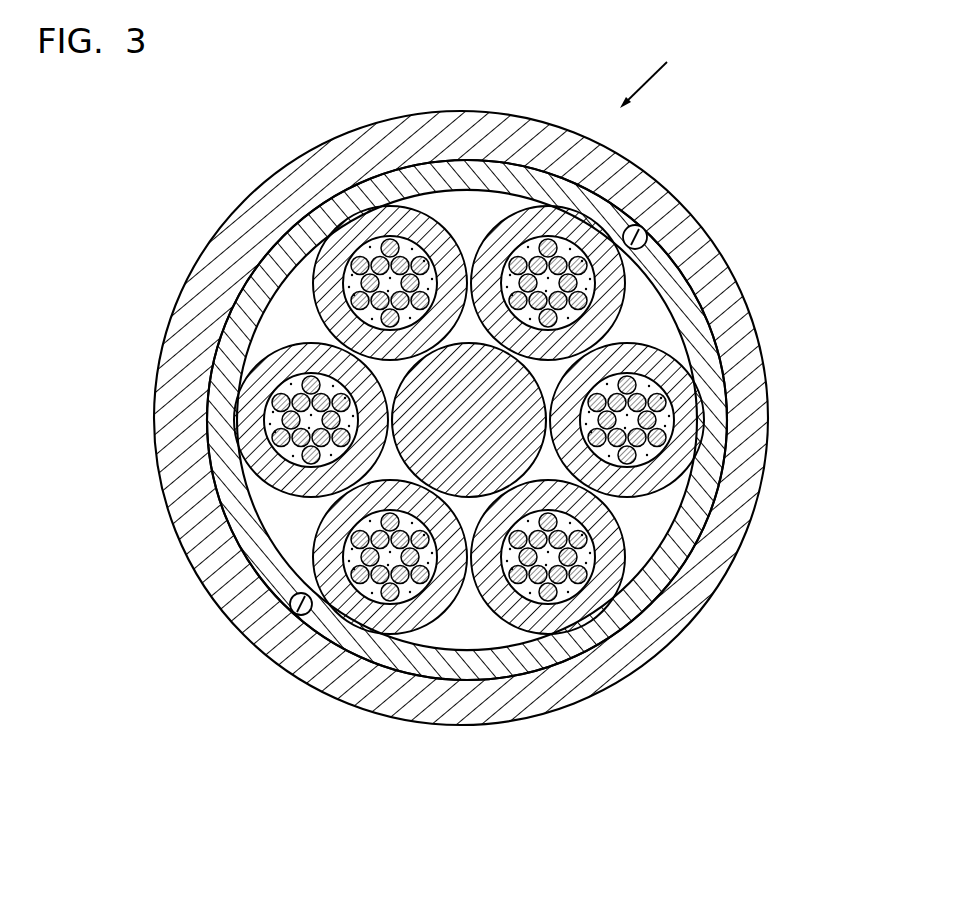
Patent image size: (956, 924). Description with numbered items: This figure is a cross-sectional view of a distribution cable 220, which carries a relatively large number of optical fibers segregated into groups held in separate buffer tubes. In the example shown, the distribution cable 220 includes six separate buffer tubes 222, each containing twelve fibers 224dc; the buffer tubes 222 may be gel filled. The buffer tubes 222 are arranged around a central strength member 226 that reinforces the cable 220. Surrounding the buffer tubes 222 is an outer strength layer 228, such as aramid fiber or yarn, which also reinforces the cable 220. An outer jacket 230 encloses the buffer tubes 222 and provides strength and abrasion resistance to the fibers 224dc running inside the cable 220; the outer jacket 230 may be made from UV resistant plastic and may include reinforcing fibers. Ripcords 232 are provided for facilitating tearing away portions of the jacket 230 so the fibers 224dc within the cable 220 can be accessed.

The distribution cable 220 is at (666, 72).
The buffer tube 222 is at (677, 367).
The fibers 224dc is at (577, 572).
The central strength member 226 is at (512, 388).
The outer strength layer 228 is at (438, 662).
The outer jacket 230 is at (745, 443).
The ripcord 232 is at (637, 233).